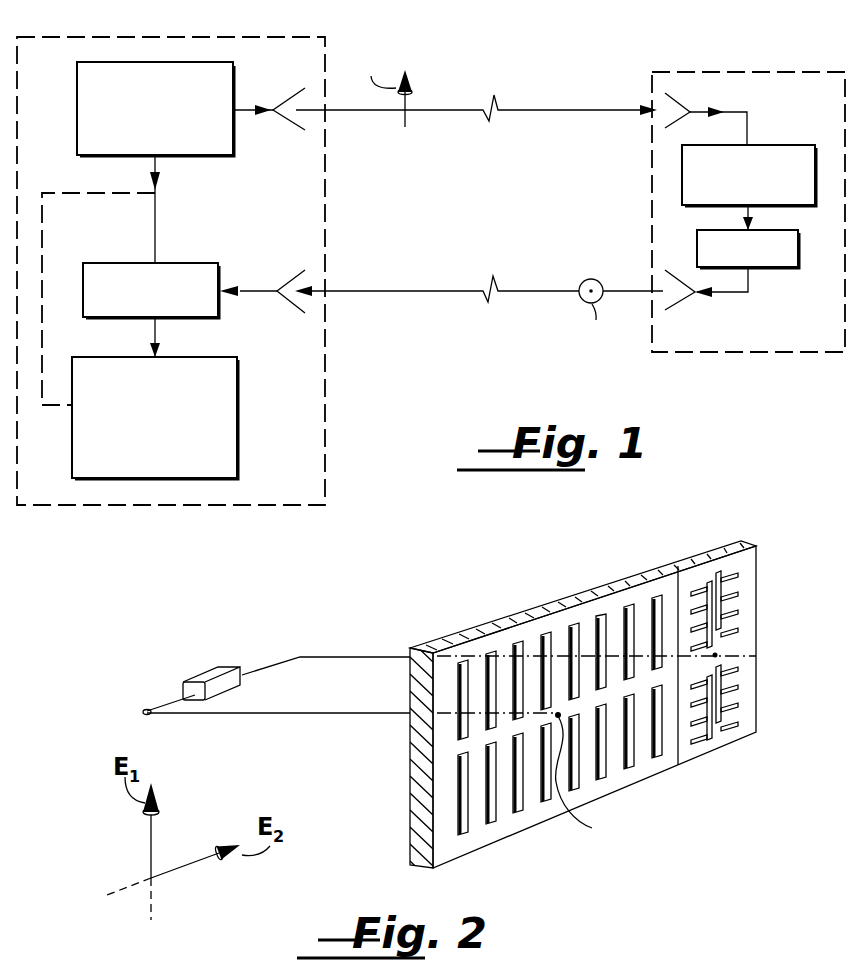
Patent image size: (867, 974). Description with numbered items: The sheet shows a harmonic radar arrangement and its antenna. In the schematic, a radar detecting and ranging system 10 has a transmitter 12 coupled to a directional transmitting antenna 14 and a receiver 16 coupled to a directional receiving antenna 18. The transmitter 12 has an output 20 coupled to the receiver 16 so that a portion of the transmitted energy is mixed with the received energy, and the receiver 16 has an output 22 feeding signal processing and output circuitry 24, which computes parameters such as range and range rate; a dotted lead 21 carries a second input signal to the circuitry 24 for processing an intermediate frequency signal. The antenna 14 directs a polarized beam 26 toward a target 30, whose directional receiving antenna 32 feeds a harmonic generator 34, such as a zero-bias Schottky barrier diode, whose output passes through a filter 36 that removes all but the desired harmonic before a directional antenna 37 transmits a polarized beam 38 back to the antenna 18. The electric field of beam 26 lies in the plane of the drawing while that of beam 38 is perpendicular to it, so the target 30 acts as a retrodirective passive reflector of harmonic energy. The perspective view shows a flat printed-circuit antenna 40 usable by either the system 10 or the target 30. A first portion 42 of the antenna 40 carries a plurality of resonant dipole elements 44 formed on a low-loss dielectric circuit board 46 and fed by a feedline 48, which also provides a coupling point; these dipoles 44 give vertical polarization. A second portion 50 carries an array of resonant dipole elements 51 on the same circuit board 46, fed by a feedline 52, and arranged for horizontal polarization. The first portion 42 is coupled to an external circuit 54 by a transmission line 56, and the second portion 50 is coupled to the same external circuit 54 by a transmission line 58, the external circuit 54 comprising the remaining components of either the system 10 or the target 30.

In FIG. 1, the radar detecting and ranging system 10 is at (162, 507).
In FIG. 1, the transmitter 12 is at (77, 88).
In FIG. 1, the directional transmitting antenna 14 is at (288, 98).
In FIG. 1, the receiver 16 is at (188, 262).
In FIG. 1, the directional receiving antenna 18 is at (290, 277).
In FIG. 1, the output 20 is at (156, 222).
In FIG. 1, the dotted lead 21 is at (42, 247).
In FIG. 1, the output 22 is at (158, 330).
In FIG. 1, the signal processing and output circuitry 24 is at (240, 418).
In FIG. 1, the polarized beam 26 is at (443, 108).
In FIG. 1, the target 30 is at (683, 72).
In FIG. 1, the directional receiving antenna 32 is at (673, 106).
In FIG. 1, the harmonic generator 34 is at (783, 144).
In FIG. 1, the filter 36 is at (785, 268).
In FIG. 1, the directional antenna 37 is at (680, 300).
In FIG. 1, the polarized beam 38 is at (436, 290).
In FIG. 2, the flat printed-circuit antenna 40 is at (408, 843).
In FIG. 2, the first portion 42 is at (525, 613).
In FIG. 2, the resonant dipole elements 44 is at (470, 832).
In FIG. 2, the low-loss dielectric circuit board 46 is at (737, 733).
In FIG. 2, the feedline 48 is at (533, 780).
In FIG. 2, the second portion 50 is at (677, 567).
In FIG. 2, the resonant dipole elements 51 is at (737, 602).
In FIG. 2, the feedline 52 is at (720, 643).
In FIG. 2, the external circuit 54 is at (190, 672).
In FIG. 2, the transmission line 56 is at (266, 715).
In FIG. 2, the transmission line 58 is at (348, 655).